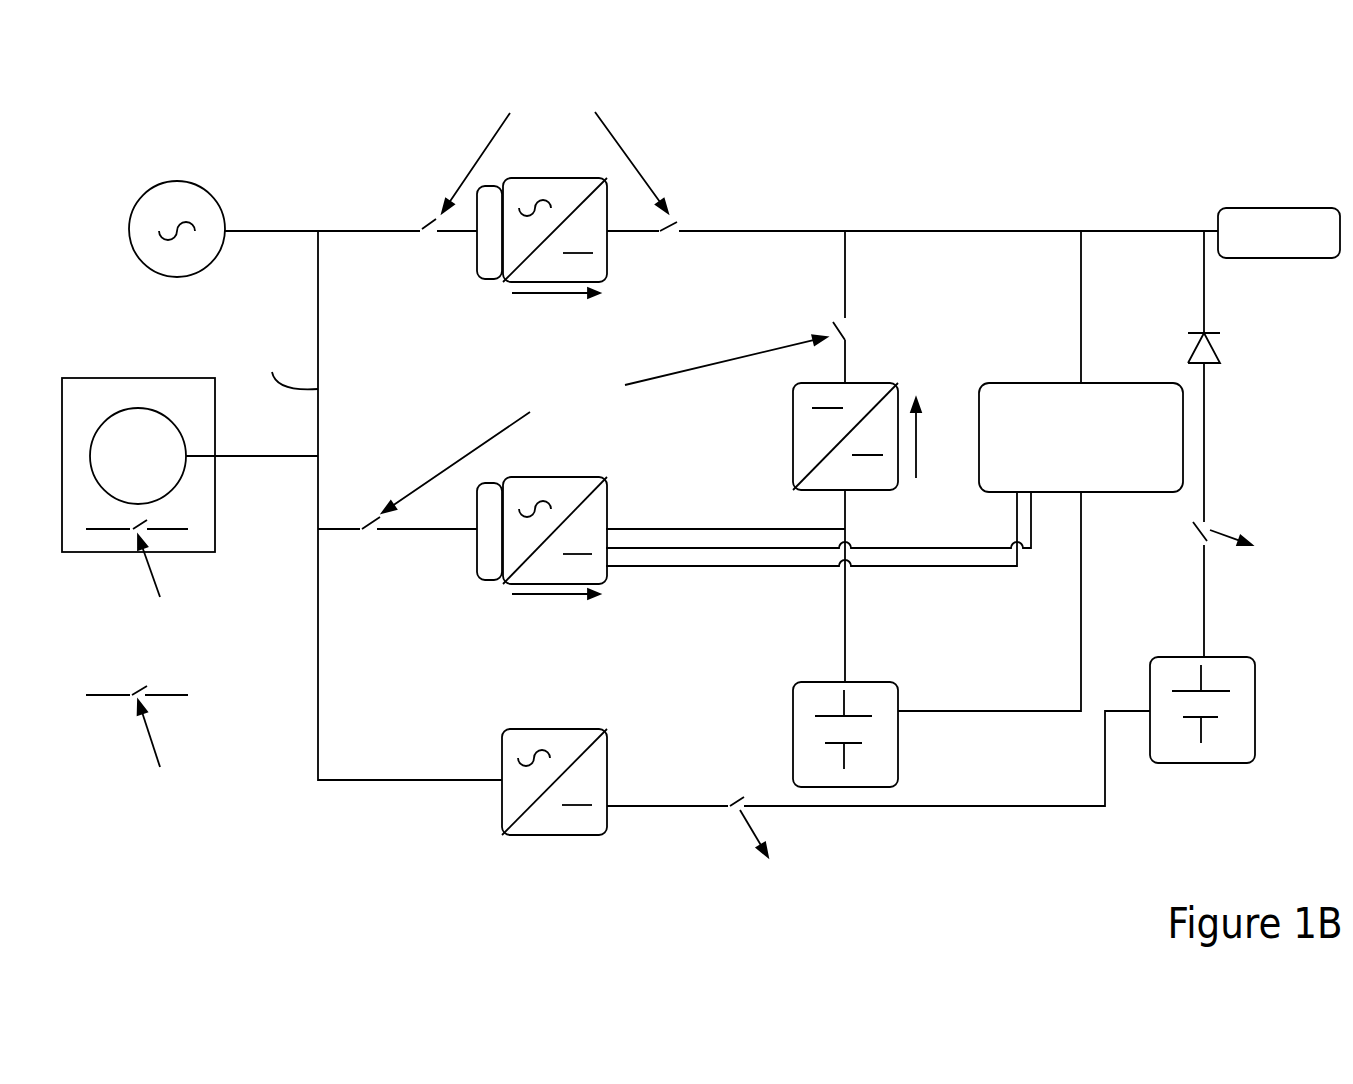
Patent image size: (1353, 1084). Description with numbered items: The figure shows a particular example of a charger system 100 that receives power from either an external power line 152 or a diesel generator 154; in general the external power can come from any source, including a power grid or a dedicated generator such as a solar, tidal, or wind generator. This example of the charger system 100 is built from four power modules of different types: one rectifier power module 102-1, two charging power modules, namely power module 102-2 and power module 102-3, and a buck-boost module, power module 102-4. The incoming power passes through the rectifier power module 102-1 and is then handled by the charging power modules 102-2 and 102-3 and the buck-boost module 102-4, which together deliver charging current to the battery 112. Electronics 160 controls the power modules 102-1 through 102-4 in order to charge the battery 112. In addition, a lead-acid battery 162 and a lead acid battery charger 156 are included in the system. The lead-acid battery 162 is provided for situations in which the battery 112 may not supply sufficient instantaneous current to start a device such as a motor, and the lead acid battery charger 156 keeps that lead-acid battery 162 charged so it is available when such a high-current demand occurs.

The charger system 100 is at (996, 115).
The external power line 152 is at (180, 182).
The diesel generator 154 is at (139, 408).
The lead acid battery charger 156 is at (512, 800).
The electronics 160 is at (1100, 383).
The lead-acid battery 162 is at (1222, 657).
The battery 112 is at (870, 682).
The rectifier power module 102-1 is at (523, 245).
The charging power module 102-2 is at (515, 547).
The charging power module 102-3 is at (598, 502).
The buck-boost module 102-4 is at (889, 412).